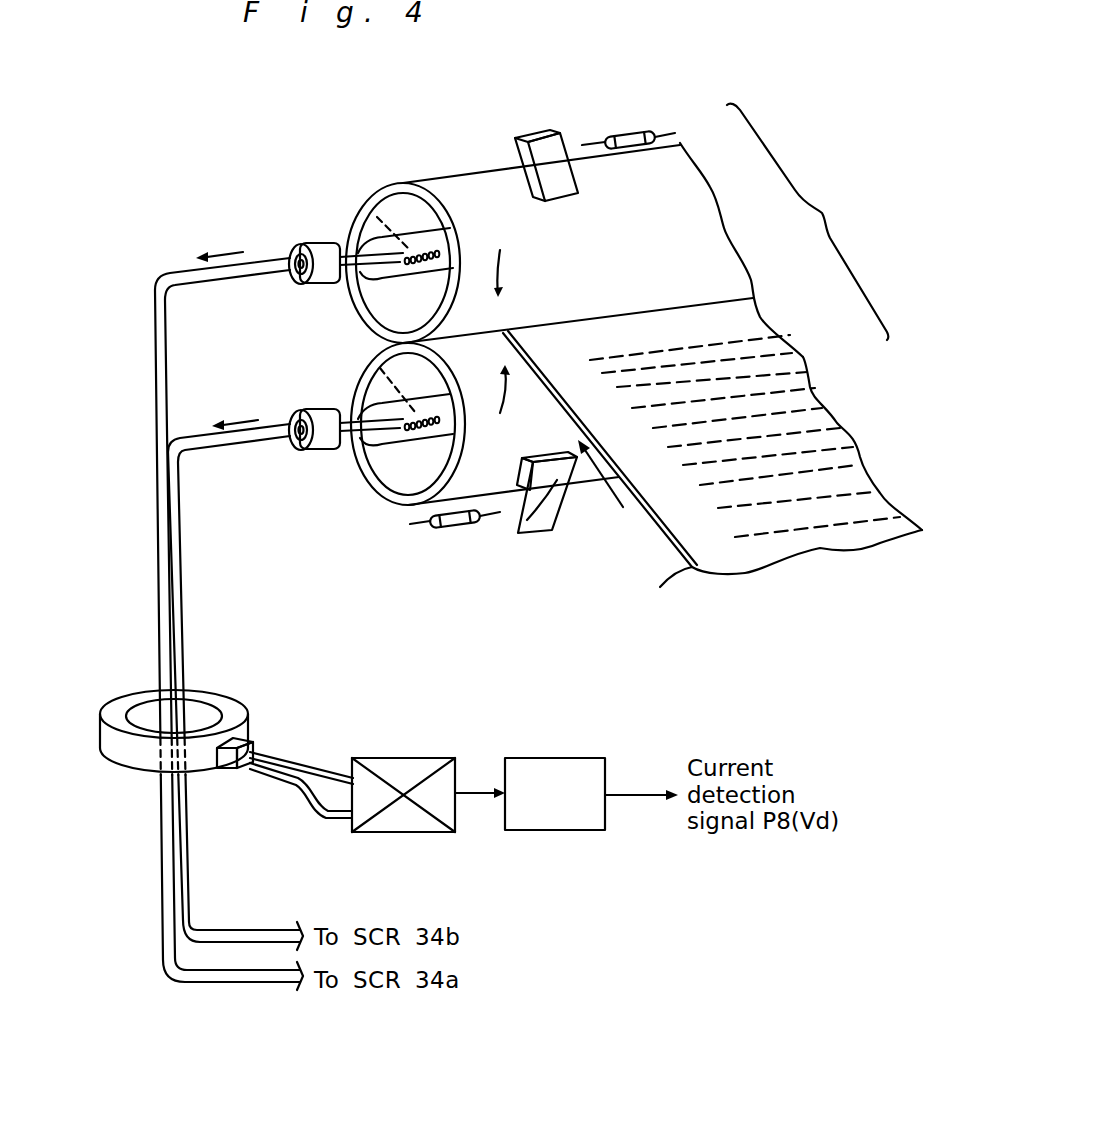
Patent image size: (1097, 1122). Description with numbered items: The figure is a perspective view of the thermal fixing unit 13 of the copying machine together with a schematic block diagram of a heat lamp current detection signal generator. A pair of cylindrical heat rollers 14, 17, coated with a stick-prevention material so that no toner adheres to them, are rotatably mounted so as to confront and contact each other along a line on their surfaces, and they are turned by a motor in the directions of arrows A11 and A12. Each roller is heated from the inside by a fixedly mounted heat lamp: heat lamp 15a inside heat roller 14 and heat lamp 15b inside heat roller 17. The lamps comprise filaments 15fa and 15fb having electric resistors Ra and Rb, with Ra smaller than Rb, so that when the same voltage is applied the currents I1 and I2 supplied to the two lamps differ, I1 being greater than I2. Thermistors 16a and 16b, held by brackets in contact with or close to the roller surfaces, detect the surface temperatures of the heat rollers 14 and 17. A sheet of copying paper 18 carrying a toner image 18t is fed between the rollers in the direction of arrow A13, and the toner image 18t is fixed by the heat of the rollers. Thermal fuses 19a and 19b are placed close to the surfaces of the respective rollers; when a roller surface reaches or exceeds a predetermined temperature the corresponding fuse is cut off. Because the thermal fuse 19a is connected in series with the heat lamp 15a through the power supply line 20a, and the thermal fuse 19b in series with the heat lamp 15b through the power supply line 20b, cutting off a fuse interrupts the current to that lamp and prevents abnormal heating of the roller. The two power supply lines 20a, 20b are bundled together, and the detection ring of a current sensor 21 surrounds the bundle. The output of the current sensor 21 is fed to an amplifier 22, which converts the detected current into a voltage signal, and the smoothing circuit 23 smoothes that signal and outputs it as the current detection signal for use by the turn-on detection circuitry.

The thermal fixing unit 13 is at (784, 230).
The heat roller 14 is at (365, 330).
The heat lamp 15a is at (370, 281).
The heat lamp 15b is at (375, 447).
The filament 15fa is at (372, 242).
The filament 15fb is at (385, 412).
The thermistor 16a is at (537, 187).
The thermistor 16b is at (523, 538).
The heat roller 17 is at (377, 493).
The sheet of copying paper 18 is at (653, 513).
The toner image 18t is at (798, 377).
The thermal fuse 19a is at (633, 133).
The thermal fuse 19b is at (450, 530).
The power supply line 20a is at (213, 289).
The power supply line 20b is at (226, 452).
The current sensor 21 is at (237, 713).
The amplifier 22 is at (427, 757).
The smoothing circuit 23 is at (550, 757).
The direction of rotation of heat roller 14 A11 is at (503, 272).
The direction of rotation of heat roller 17 A12 is at (503, 407).
The paper feed direction A13 is at (623, 507).
The current supplied to heat lamp 15a I1 is at (219, 242).
The current supplied to heat lamp 15b I2 is at (235, 410).